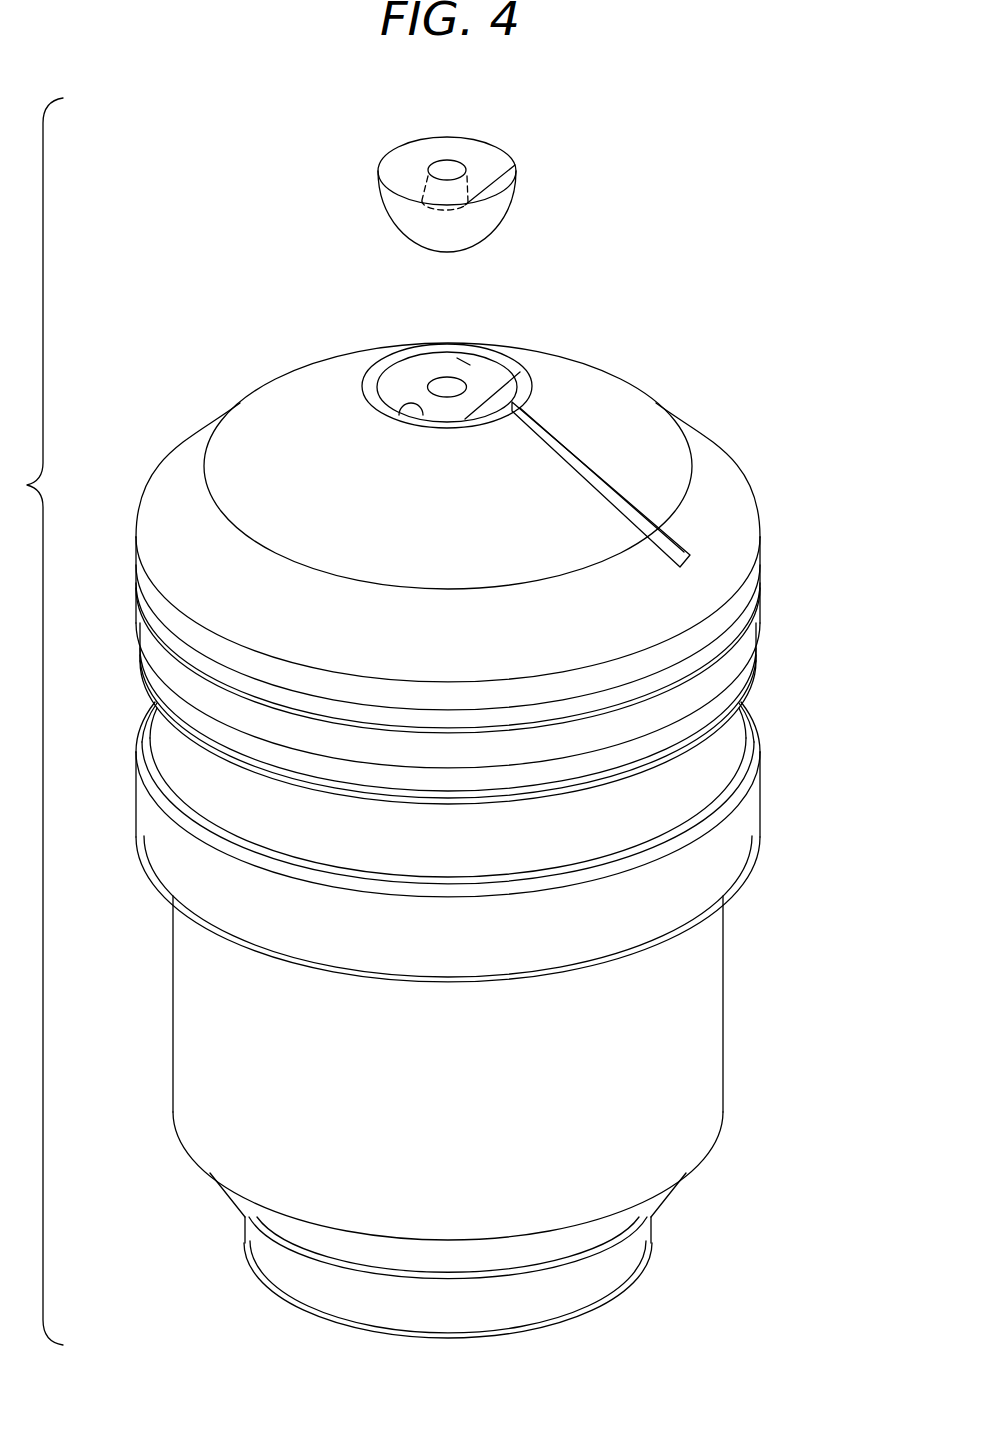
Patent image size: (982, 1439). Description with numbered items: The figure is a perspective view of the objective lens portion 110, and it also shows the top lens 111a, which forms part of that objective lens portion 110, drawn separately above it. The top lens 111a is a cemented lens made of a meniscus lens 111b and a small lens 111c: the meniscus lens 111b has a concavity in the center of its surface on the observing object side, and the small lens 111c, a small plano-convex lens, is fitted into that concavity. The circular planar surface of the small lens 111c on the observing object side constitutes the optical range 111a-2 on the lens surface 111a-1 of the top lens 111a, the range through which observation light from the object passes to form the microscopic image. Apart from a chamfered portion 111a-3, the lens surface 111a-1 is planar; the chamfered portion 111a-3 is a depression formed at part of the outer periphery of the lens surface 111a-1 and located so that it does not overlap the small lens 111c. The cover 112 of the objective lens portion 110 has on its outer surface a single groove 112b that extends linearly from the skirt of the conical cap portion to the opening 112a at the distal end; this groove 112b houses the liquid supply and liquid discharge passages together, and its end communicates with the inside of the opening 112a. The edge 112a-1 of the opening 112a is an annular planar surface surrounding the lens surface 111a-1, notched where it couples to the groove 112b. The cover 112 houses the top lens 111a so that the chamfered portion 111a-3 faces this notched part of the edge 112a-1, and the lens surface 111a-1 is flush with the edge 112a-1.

The objective lens portion 110 is at (727, 424).
The top lens 111a is at (524, 257).
The lens surface 111a-1 is at (463, 360).
The optical range 111a-2 is at (467, 384).
The chamfered portion 111a-3 is at (504, 184).
The meniscus lens 111b is at (397, 146).
The small lens 111c is at (422, 200).
The cover 112 is at (268, 388).
The opening 112a is at (407, 440).
The edge 112a-1 is at (372, 392).
The groove 112b is at (589, 461).